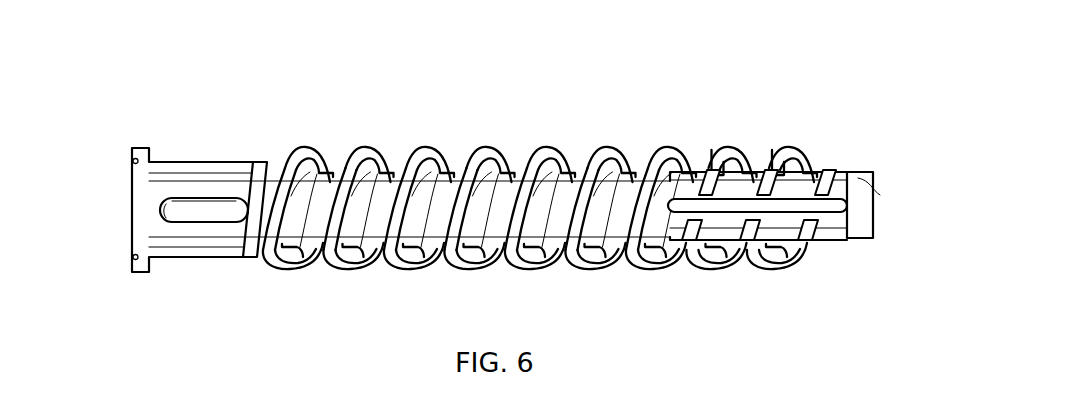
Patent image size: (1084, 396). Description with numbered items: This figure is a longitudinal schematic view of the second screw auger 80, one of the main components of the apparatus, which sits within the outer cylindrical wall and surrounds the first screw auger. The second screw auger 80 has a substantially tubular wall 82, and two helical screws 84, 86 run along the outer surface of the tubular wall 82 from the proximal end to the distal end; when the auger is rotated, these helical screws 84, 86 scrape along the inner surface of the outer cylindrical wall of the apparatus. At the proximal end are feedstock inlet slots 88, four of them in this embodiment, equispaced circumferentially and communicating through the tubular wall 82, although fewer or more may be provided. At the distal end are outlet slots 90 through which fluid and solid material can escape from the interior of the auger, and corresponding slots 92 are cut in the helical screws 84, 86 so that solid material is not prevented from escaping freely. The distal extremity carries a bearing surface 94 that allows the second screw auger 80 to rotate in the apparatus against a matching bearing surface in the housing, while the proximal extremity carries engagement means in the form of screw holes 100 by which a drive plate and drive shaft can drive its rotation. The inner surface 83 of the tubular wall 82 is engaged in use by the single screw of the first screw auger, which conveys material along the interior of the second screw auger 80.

The second screw auger 80 is at (592, 195).
The tubular wall 82 is at (398, 168).
The inner surface 83 is at (880, 195).
The helical screw 84 is at (302, 148).
The helical screw 86 is at (310, 270).
The feedstock inlet slots 88 is at (220, 206).
The outlet slots 90 is at (830, 223).
The slots 92 is at (702, 170).
The bearing surface 94 is at (861, 172).
The screw holes 100 is at (128, 160).